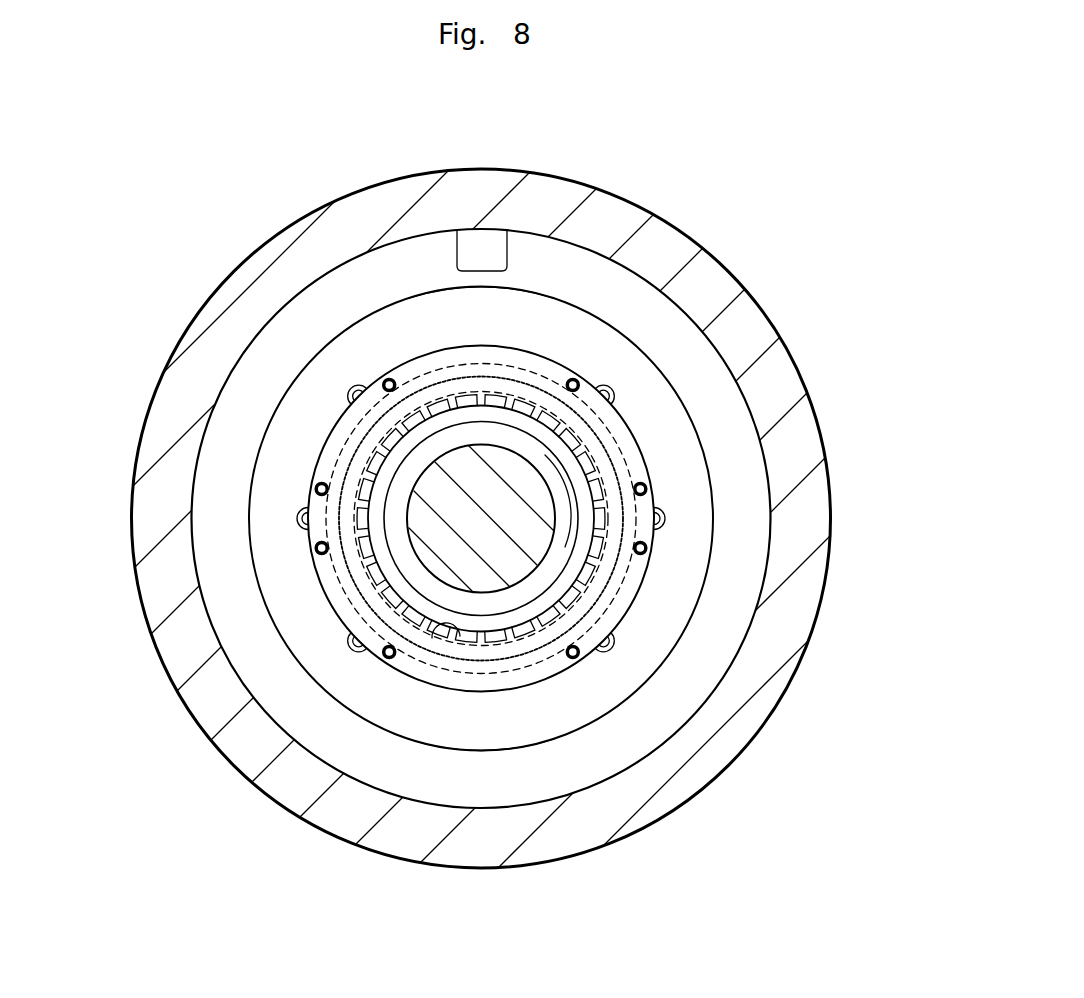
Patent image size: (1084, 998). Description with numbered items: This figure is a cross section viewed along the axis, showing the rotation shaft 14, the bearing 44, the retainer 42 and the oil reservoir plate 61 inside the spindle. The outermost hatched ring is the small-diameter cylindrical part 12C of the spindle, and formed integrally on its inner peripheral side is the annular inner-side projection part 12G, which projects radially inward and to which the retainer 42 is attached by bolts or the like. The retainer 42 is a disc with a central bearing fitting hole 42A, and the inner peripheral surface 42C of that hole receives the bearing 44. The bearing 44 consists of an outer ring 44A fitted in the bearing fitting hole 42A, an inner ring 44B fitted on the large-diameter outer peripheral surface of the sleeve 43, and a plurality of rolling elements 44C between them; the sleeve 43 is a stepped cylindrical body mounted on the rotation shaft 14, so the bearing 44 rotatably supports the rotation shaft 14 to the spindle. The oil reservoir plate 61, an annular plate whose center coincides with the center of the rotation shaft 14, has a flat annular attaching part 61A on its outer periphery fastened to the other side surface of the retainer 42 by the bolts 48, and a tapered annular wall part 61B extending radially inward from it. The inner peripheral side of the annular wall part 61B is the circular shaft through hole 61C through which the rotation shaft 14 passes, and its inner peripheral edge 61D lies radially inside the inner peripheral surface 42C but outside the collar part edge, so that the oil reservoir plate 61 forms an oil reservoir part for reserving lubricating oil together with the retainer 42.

The small-diameter cylindrical part 12C is at (604, 228).
The inner-side projection part 12G is at (338, 317).
The rotation shaft 14 is at (482, 503).
The retainer 42 is at (677, 580).
The bearing fitting hole 42A is at (636, 548).
The inner peripheral surface 42C is at (590, 595).
The sleeve 43 is at (563, 490).
The bearing 44 is at (483, 437).
The outer ring 44A is at (363, 515).
The inner ring 44B is at (388, 555).
The rolling elements 44C is at (484, 405).
The bolts 48 is at (388, 379).
The oil reservoir plate 61 is at (528, 663).
The annular attaching part 61A is at (435, 674).
The annular wall part 61B is at (525, 642).
The shaft through hole 61C is at (557, 573).
The inner peripheral edge 61D is at (460, 633).